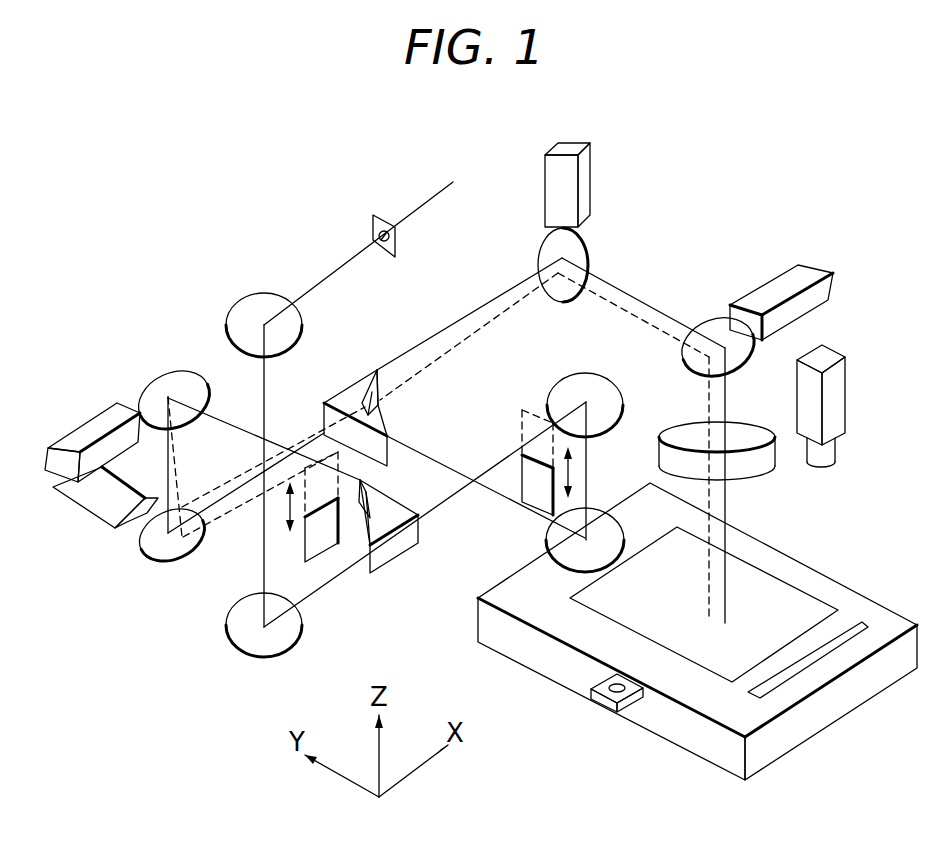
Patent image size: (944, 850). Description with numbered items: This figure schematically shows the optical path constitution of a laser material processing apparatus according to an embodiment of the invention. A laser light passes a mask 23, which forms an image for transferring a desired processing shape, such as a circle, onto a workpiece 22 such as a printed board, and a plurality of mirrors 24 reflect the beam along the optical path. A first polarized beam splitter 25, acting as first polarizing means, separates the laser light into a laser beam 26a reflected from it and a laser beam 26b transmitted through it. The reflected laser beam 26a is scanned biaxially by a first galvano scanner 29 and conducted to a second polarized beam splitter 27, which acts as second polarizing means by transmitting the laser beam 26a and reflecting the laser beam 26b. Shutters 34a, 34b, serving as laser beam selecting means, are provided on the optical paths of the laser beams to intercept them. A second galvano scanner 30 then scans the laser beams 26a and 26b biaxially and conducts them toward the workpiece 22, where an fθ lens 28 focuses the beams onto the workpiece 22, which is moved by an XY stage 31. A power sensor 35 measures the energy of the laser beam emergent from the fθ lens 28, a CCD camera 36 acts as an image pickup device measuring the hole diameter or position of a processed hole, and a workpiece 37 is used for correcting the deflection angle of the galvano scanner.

The workpiece 22 is at (678, 660).
The mask 23 is at (372, 224).
The mirrors 24 is at (228, 318).
The first polarized beam splitter 25 is at (388, 565).
The laser beam reflected from the first polarized beam splitter 26a is at (232, 428).
The laser beam transmitted through the first polarized beam splitter 26b is at (468, 492).
The second polarized beam splitter 27 is at (350, 387).
The fθ lens 28 is at (688, 423).
The first galvano scanner 29 is at (52, 470).
The second galvano scanner 30 is at (582, 178).
The XY stage 31 is at (540, 662).
The shutter 34a is at (303, 545).
The shutter 34b is at (520, 423).
The power sensor 35 is at (600, 706).
The CCD camera 36 is at (847, 388).
The workpiece for correcting the deflection angle 37 is at (750, 700).